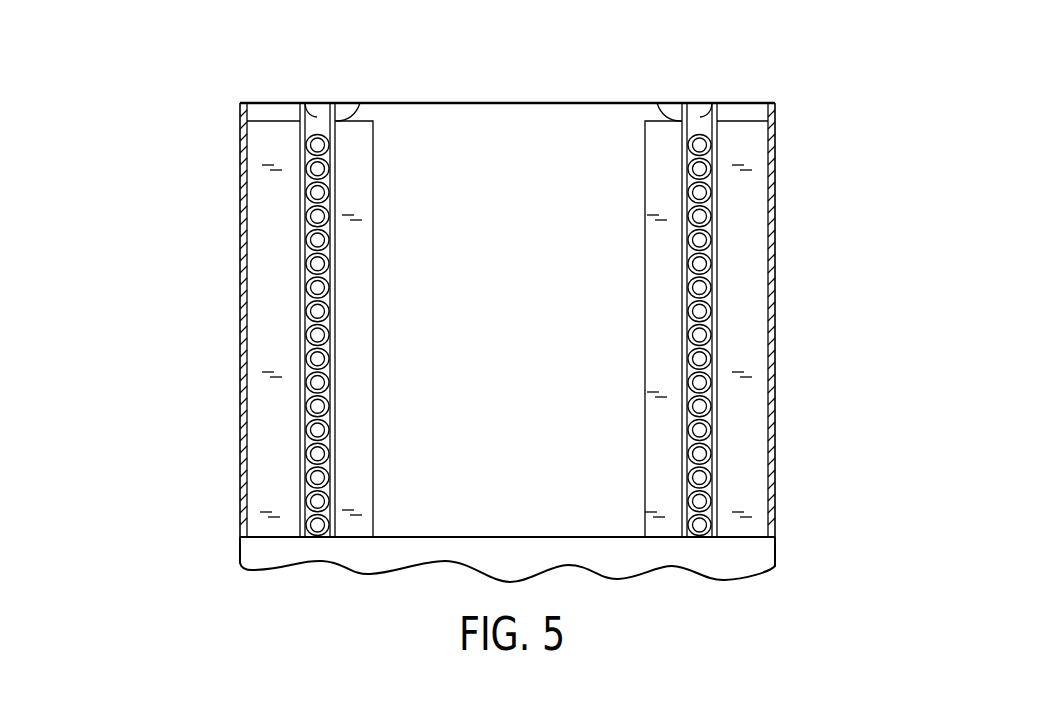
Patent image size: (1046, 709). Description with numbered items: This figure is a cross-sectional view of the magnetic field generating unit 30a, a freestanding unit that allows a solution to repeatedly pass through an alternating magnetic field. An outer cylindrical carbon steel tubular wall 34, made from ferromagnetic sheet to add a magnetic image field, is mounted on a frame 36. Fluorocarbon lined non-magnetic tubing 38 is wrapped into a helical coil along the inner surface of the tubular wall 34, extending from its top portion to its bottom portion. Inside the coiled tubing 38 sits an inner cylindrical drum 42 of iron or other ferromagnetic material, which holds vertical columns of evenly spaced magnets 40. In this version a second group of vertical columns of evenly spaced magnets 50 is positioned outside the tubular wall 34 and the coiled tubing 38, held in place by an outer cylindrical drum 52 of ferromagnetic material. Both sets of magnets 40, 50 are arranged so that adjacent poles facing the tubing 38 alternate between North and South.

The magnetic field generating unit 30a is at (168, 270).
The tubular wall 34 is at (315, 103).
The frame 36 is at (786, 548).
The tubing 38 is at (330, 343).
The magnets 40 is at (382, 185).
The inner cylindrical drum 42 is at (360, 103).
The magnets 50 is at (247, 342).
The outer cylindrical drum 52 is at (230, 112).